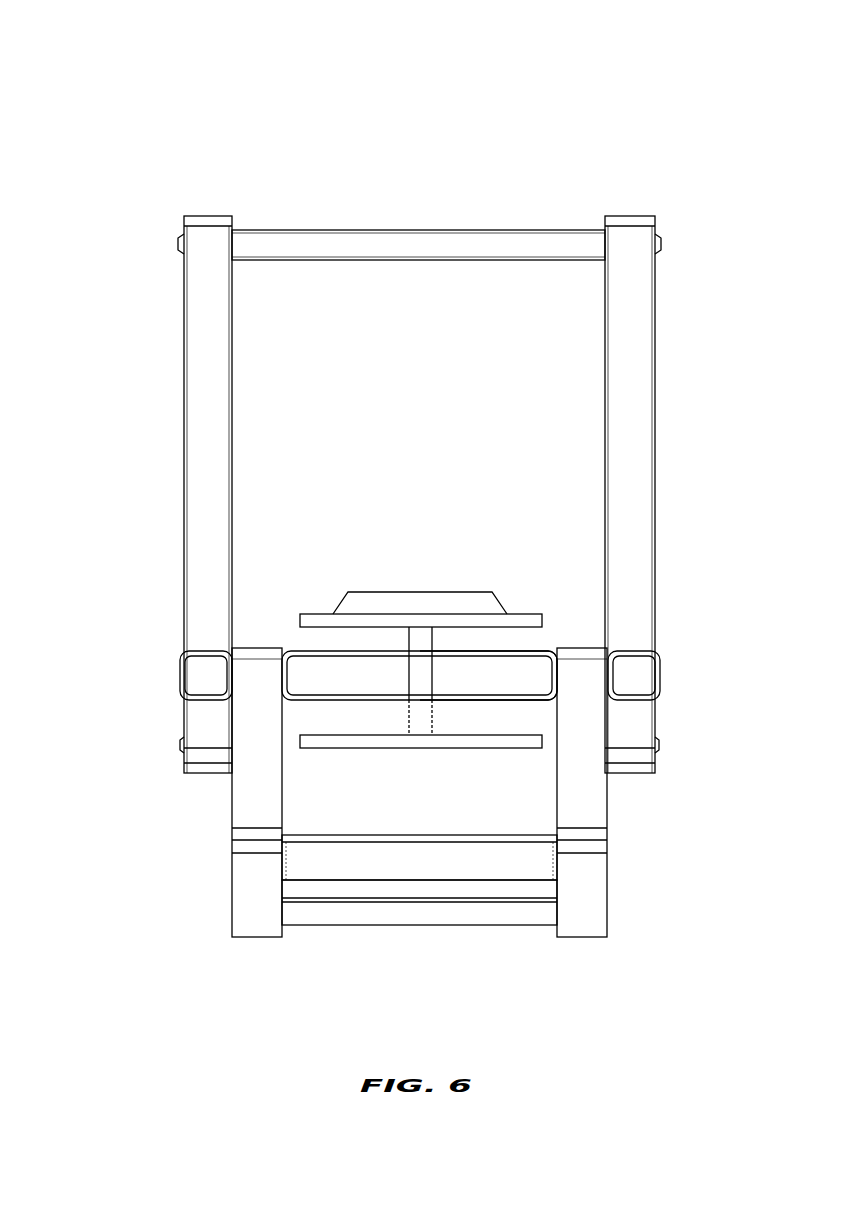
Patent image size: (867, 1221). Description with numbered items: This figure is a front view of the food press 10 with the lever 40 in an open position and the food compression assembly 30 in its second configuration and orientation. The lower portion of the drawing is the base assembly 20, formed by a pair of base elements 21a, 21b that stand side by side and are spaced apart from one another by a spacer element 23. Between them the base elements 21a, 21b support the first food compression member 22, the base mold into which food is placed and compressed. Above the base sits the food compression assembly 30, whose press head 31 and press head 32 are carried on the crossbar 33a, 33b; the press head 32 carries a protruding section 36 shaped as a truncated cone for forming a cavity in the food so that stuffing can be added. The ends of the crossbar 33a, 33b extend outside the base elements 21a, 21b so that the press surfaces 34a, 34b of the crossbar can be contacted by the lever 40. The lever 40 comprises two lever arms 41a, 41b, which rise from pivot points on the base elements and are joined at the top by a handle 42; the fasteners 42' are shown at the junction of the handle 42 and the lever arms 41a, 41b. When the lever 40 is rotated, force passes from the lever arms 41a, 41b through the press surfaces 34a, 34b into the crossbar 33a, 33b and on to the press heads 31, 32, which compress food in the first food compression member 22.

The food press 10 is at (682, 60).
The base assembly 20 is at (634, 819).
The base element 21a is at (232, 889).
The base element 21b is at (607, 895).
The first food compression member 22 is at (430, 834).
The spacer element 23 is at (420, 900).
The food compression assembly 30 is at (422, 578).
The press head 31 is at (412, 750).
The press head 32 is at (465, 590).
The crossbar 33a is at (178, 690).
The crossbar 33b is at (663, 685).
The press surface 34a is at (212, 650).
The press surface 34b is at (645, 651).
The protruding section 36 is at (342, 598).
The lever arm assembly 40 is at (176, 281).
The lever arm 41a is at (206, 421).
The lever arm 41b is at (630, 426).
The handle 42 is at (418, 203).
The fastener 42' is at (433, 211).